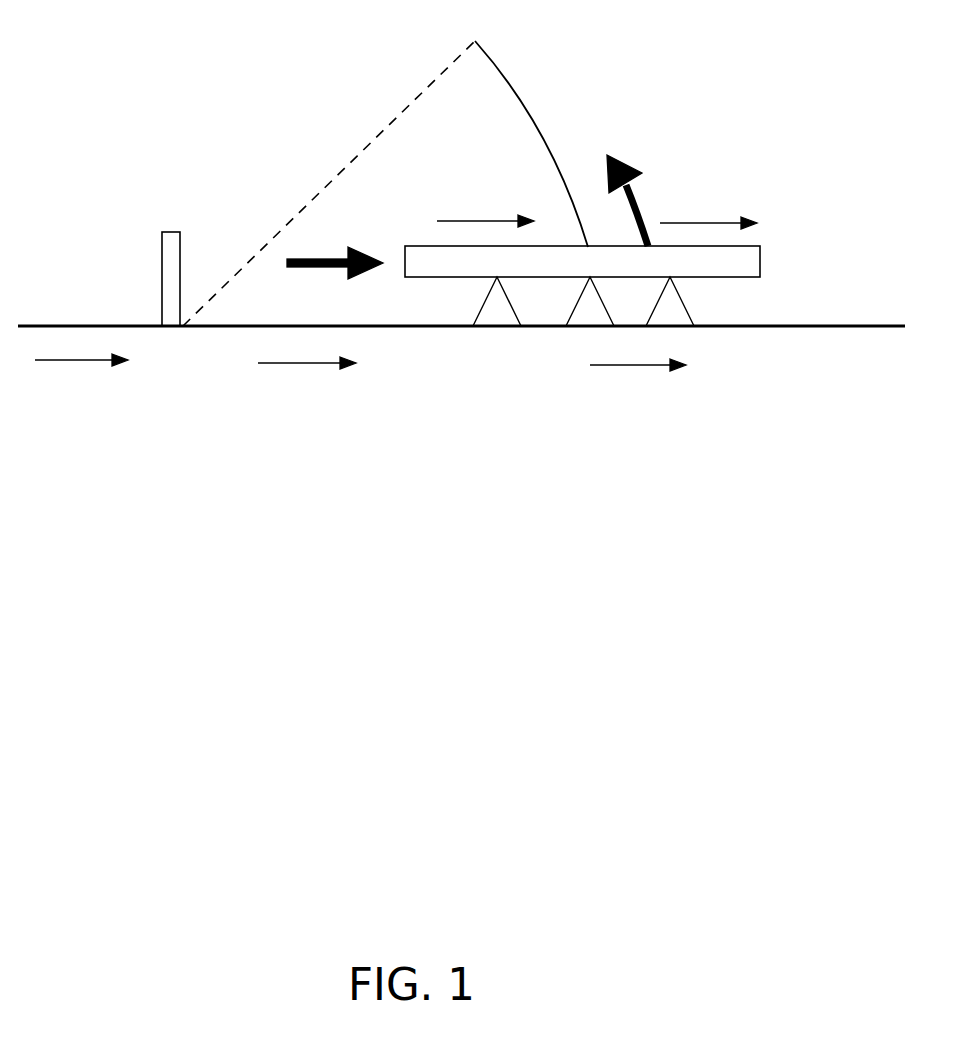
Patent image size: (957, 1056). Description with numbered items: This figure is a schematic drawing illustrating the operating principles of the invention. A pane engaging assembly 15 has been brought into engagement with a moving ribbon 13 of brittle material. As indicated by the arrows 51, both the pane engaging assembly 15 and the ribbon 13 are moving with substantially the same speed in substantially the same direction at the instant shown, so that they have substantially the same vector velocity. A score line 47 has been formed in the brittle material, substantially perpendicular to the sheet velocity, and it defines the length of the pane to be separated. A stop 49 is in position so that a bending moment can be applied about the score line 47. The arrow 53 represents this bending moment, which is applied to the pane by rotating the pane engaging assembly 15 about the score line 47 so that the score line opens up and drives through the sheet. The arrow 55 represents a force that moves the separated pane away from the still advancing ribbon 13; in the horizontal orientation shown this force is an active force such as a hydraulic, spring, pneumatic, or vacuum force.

The moving ribbon 13 is at (790, 328).
The pane engaging assembly 15 is at (770, 247).
The score line 47 is at (182, 328).
The stop 49 is at (164, 258).
The arrows 51 is at (55, 361).
The arrow 53 is at (643, 213).
The arrow 55 is at (295, 268).